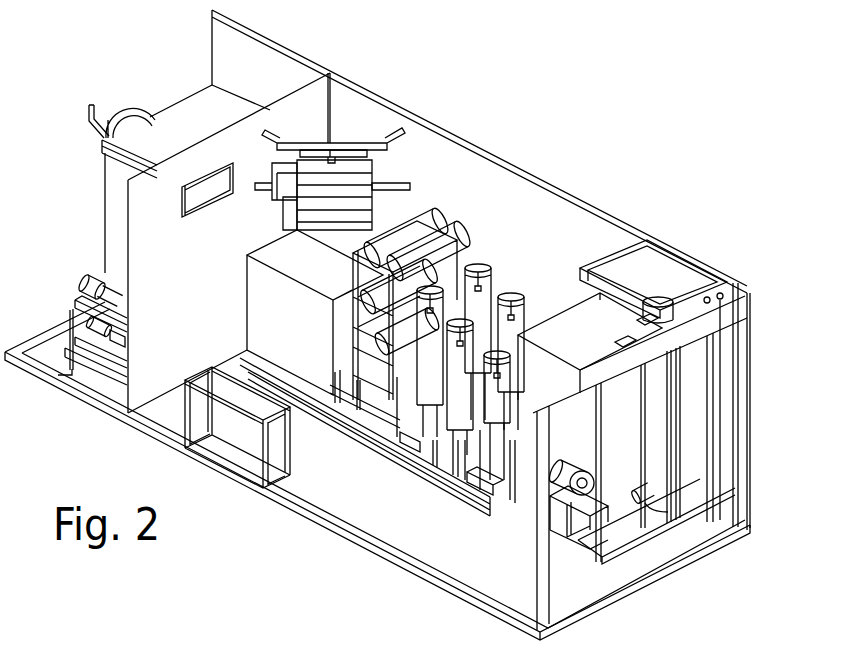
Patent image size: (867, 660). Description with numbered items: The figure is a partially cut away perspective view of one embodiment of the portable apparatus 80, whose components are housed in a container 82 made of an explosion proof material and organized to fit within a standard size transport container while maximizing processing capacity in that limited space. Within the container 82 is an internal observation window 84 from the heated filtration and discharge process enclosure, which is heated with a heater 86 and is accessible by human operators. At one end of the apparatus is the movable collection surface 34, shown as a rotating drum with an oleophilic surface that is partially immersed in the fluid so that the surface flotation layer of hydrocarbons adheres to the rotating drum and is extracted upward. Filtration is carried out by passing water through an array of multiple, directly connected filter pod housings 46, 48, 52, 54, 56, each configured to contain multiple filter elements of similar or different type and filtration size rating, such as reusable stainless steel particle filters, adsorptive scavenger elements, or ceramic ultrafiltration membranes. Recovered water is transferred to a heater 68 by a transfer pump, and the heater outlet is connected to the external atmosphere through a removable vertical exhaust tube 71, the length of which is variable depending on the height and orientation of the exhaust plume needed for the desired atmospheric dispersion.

The movable collection surface 34 is at (138, 122).
The filter pod housing 46 is at (480, 267).
The filter pod housing 48 is at (515, 293).
The filter pod housing 52 is at (398, 372).
The filter pod housing 54 is at (423, 462).
The filter pod housing 56 is at (530, 305).
The heater 68 is at (705, 283).
The vertical exhaust tube 71 is at (292, 490).
The portable apparatus 80 is at (117, 439).
The container 82 is at (475, 197).
The internal observation window 84 is at (197, 178).
The heater 86 is at (360, 180).